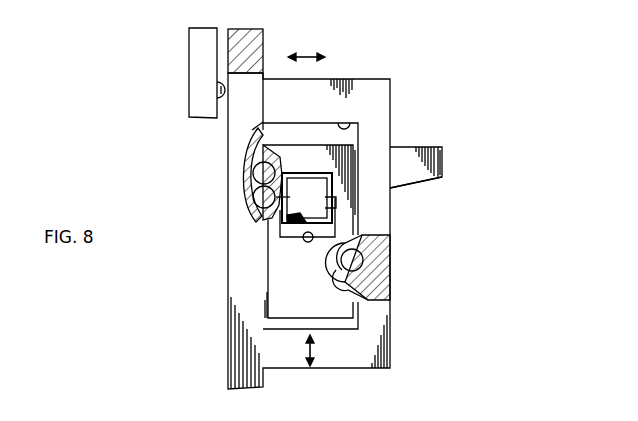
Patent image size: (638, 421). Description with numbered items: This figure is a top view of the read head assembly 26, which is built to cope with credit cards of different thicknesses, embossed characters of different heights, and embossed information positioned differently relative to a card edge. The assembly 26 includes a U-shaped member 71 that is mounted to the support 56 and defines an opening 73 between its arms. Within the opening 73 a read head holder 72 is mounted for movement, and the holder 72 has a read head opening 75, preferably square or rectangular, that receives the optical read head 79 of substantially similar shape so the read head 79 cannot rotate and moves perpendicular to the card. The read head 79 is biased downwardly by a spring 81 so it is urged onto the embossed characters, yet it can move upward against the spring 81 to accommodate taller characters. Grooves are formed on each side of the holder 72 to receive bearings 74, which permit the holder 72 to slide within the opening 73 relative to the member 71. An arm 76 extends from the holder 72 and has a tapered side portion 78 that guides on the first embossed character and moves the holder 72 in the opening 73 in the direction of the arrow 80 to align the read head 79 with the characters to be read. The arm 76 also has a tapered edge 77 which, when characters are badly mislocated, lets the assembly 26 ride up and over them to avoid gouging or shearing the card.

The read head assembly 26 is at (397, 296).
The support 56 is at (263, 47).
The U-shaped member 71 is at (373, 337).
The read head holder 72 is at (315, 150).
The opening 73 is at (348, 122).
The bearings 74 is at (259, 172).
The read head opening 75 is at (298, 218).
The arm 76 is at (412, 148).
The tapered edge 77 is at (442, 162).
The tapered side portion 78 is at (420, 183).
The optical read head 79 is at (328, 207).
The arrow 80 is at (308, 348).
The spring 81 is at (292, 240).